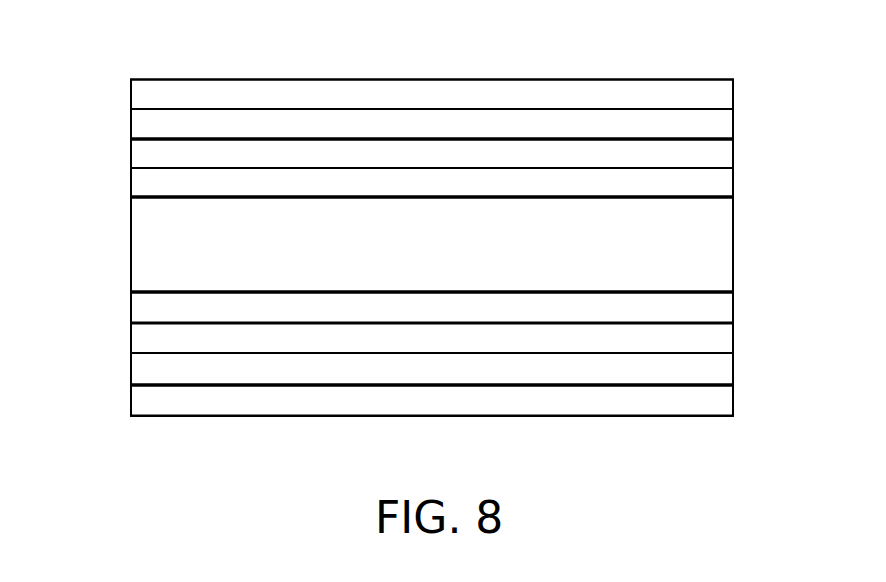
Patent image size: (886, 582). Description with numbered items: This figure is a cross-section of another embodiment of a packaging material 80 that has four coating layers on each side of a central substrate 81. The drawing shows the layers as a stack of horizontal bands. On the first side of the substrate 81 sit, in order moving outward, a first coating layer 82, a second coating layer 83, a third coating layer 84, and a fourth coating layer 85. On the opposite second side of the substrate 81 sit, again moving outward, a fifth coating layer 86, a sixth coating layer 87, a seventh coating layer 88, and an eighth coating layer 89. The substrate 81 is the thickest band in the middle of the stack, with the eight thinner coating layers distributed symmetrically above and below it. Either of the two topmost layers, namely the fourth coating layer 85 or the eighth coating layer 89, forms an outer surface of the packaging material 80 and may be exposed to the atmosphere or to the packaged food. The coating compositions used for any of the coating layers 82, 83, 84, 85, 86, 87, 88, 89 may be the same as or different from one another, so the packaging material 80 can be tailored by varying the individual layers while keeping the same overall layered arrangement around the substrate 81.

The packaging material 80 is at (758, 243).
The substrate 81 is at (130, 267).
The first coating layer 82 is at (130, 183).
The second coating layer 83 is at (130, 153).
The third coating layer 84 is at (130, 122).
The fourth coating layer 85 is at (130, 92).
The fifth coating layer 86 is at (130, 308).
The sixth coating layer 87 is at (130, 338).
The seventh coating layer 88 is at (130, 368).
The eighth coating layer 89 is at (130, 400).